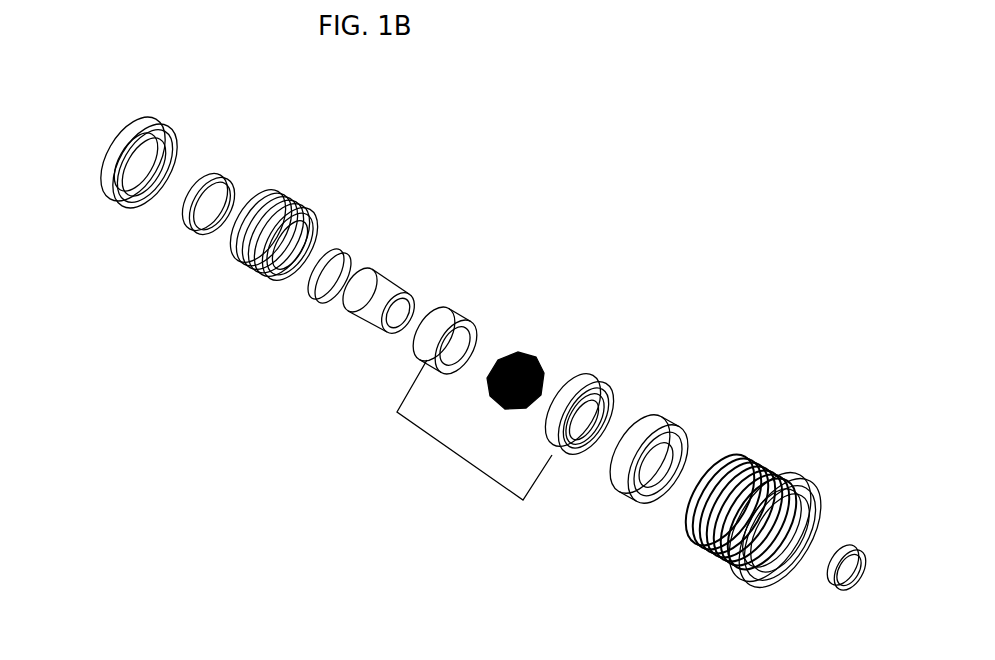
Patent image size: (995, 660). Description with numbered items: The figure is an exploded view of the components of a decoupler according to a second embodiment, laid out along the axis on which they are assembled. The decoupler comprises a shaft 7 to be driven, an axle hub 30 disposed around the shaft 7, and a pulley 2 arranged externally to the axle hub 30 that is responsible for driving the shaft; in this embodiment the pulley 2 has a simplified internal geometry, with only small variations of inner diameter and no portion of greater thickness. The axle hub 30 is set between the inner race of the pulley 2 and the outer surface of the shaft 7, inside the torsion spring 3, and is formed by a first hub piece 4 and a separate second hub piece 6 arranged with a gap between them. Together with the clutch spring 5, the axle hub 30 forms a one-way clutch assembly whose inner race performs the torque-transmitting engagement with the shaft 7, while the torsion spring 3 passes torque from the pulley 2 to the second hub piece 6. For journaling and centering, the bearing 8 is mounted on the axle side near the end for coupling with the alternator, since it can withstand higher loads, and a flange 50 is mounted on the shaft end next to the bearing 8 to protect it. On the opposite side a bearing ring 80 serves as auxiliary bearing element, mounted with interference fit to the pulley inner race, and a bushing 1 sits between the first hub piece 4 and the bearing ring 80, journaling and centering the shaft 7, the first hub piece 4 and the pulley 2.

The bearing ring 80 is at (183, 130).
The bushing 1 is at (237, 172).
The torsion spring 3 is at (322, 208).
The shaft 7 is at (397, 262).
The first hub piece 4 is at (475, 303).
The clutch spring 5 is at (550, 343).
The second hub piece 6 is at (615, 378).
The bearing 8 is at (683, 413).
The pulley 2 is at (780, 455).
The flange 50 is at (840, 590).
The axle hub 30 is at (460, 458).